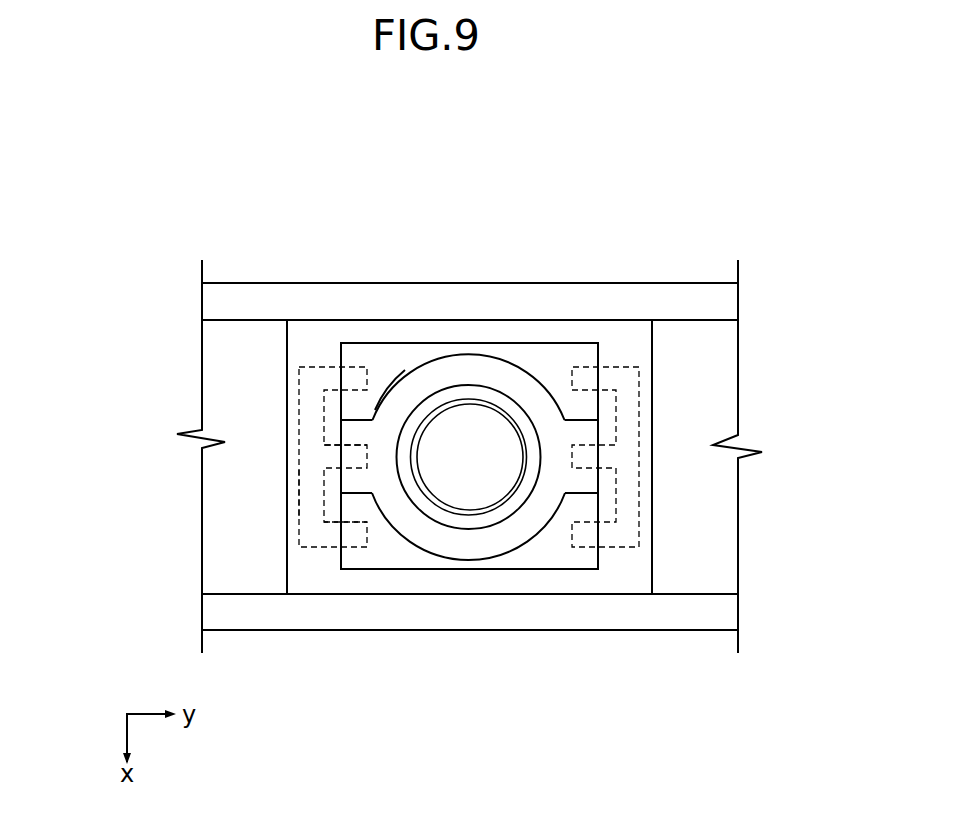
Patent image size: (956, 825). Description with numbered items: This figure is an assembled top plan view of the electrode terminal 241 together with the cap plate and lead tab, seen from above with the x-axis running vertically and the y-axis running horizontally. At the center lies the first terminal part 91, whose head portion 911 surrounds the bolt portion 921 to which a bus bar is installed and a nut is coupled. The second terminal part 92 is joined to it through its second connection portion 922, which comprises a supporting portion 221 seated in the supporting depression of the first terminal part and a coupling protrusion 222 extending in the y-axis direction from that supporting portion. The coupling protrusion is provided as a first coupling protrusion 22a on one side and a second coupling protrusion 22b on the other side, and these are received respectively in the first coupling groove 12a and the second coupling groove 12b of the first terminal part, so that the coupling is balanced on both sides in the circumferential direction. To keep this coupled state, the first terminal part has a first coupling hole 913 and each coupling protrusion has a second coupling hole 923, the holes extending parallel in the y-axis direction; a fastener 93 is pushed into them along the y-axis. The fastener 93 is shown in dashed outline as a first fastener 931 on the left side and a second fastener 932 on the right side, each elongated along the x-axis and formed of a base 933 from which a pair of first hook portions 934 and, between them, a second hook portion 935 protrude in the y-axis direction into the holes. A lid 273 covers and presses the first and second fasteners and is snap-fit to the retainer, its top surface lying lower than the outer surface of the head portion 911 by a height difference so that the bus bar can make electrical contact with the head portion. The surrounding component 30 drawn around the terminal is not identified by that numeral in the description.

The electrode terminal 241 is at (476, 172).
The substrate 30 is at (718, 348).
The first coupling protrusion 22a is at (353, 432).
The second coupling protrusion 22b is at (583, 435).
The first coupling groove 12a is at (358, 488).
The second coupling groove 12b is at (583, 493).
The first terminal part 91 is at (551, 362).
The head portion 911 is at (538, 558).
The first coupling hole 913 is at (353, 547).
The second terminal part 92 is at (481, 420).
The bolt portion 921 is at (453, 400).
The second connection portion 922 is at (395, 228).
The supporting portion 221 is at (402, 393).
The coupling protrusion 222 is at (351, 410).
The second coupling hole 923 is at (353, 447).
The fastener 93 is at (361, 388).
The first fastener 931 is at (125, 460).
The second fastener 932 is at (621, 360).
The base 933 is at (313, 497).
The first hook portion 934 is at (337, 522).
The second hook portion 935 is at (343, 468).
The lid 273 is at (492, 587).